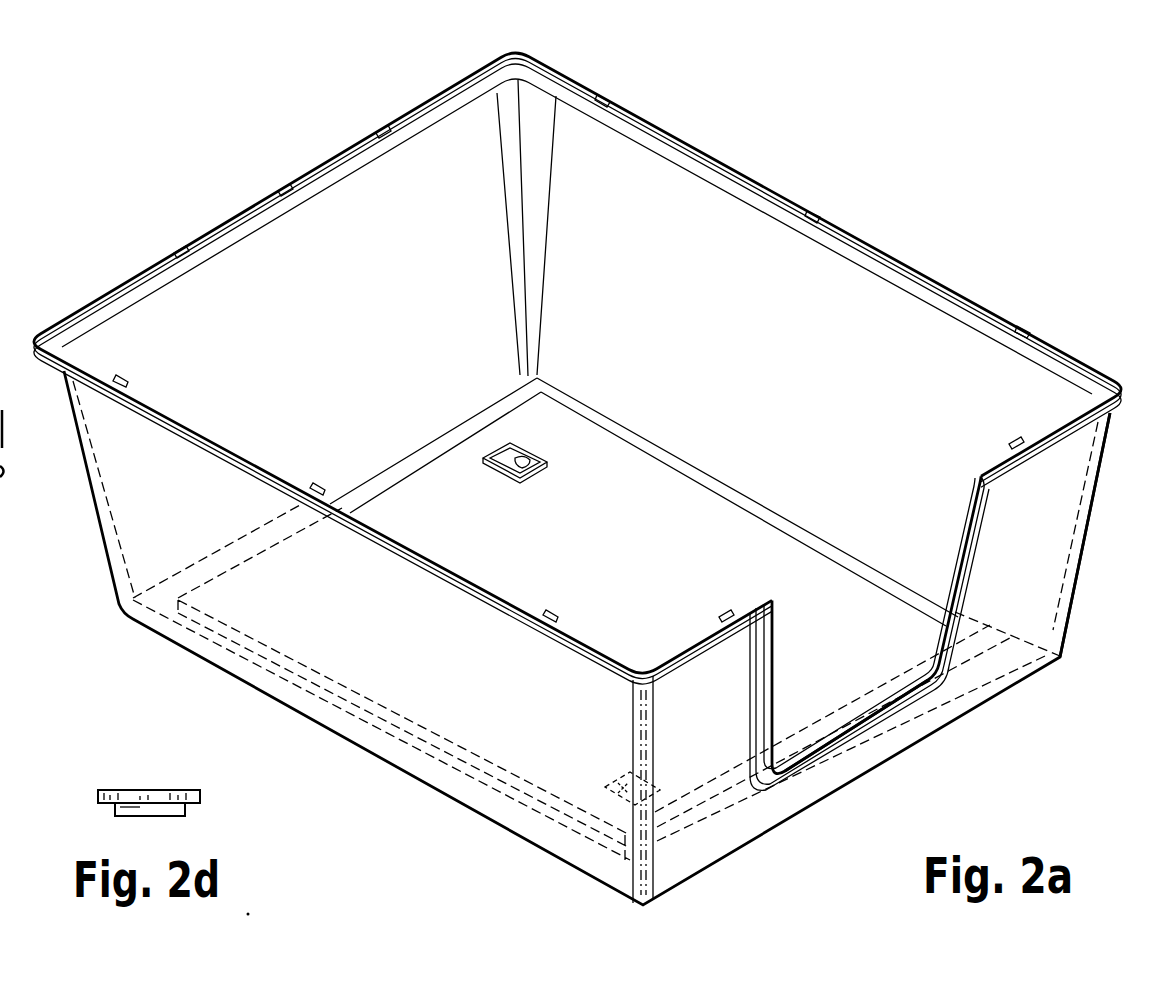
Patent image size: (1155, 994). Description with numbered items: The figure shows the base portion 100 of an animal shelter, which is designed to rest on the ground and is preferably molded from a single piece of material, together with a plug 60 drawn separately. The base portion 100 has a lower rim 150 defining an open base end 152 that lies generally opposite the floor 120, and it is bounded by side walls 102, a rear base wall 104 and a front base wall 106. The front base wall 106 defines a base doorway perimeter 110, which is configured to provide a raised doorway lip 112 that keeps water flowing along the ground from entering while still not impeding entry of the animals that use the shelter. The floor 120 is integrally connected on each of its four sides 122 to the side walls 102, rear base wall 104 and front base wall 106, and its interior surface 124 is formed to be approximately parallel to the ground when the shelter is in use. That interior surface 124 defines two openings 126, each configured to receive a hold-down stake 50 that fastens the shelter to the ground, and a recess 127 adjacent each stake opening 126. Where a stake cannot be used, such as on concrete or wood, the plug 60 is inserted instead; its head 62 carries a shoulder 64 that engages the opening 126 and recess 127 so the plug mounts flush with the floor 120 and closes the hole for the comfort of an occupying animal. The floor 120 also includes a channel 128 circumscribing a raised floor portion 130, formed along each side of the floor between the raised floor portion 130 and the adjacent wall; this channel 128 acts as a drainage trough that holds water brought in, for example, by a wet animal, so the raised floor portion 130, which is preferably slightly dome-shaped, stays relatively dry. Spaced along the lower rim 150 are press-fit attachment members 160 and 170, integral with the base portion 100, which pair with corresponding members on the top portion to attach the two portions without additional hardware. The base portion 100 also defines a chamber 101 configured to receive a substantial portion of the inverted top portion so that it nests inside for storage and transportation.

In FIG. 2A, the stake 50 is at (0, 168).
In FIG. 2D, the plug 60 is at (222, 824).
In FIG. 2D, the head 62 is at (98, 797).
In FIG. 2D, the shoulder 64 is at (115, 810).
In FIG. 2A, the base portion 100 is at (829, 114).
In FIG. 2A, the chamber 101 is at (373, 269).
In FIG. 2A, the side walls 102 is at (705, 318).
In FIG. 2A, the rear base wall 104 is at (262, 318).
In FIG. 2A, the front base wall 106 is at (1043, 520).
In FIG. 2A, the base doorway perimeter 110 is at (780, 682).
In FIG. 2A, the doorway lip 112 is at (870, 742).
In FIG. 2A, the floor 120 is at (642, 478).
In FIG. 2A, the sides 122 is at (367, 490).
In FIG. 2A, the interior surface 124 is at (648, 509).
In FIG. 2A, the opening 126 is at (512, 450).
In FIG. 2A, the recess 127 is at (548, 458).
In FIG. 2A, the channel 128 is at (403, 448).
In FIG. 2A, the raised floor portion 130 is at (558, 560).
In FIG. 2A, the lower rim 150 is at (937, 261).
In FIG. 2A, the open base end 152 is at (942, 345).
In FIG. 2A, the press-fit attachment members 160 is at (180, 250).
In FIG. 2A, the press-fit attachment members 170 is at (572, 85).